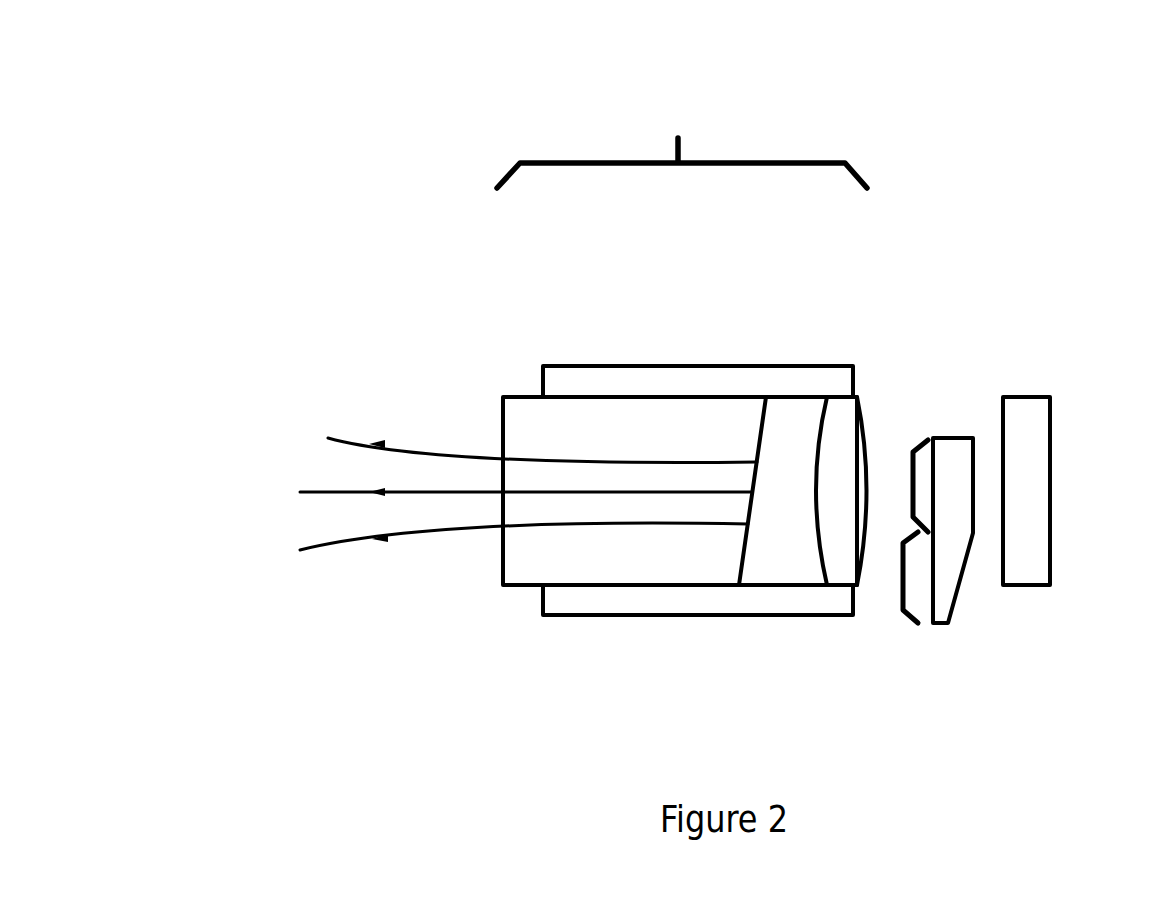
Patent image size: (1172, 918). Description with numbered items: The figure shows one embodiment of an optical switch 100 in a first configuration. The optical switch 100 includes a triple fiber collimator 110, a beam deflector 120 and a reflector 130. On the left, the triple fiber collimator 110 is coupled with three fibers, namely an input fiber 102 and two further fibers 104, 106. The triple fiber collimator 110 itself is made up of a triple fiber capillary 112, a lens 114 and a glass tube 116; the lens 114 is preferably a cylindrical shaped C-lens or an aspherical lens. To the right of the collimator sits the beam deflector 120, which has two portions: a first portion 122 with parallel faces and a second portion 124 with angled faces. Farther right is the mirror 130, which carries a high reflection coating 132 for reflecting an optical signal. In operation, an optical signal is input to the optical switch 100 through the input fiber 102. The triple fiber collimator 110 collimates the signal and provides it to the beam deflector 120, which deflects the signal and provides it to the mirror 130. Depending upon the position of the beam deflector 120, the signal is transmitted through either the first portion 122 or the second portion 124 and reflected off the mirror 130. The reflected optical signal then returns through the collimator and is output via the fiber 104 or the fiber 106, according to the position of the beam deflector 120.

The optical switch 100 is at (755, 63).
The triple fiber collimator 110 is at (682, 141).
The glass tube 116 is at (667, 365).
The triple fiber capillary 112 is at (502, 573).
The lens 114 is at (813, 540).
The input fiber 102 is at (362, 440).
The fiber 104 is at (323, 547).
The fiber 106 is at (323, 492).
The beam deflector 120 is at (954, 437).
The first portion of the beam deflector 122 is at (910, 483).
The second portion of the beam deflector 124 is at (900, 577).
The reflector 130 is at (1027, 397).
The high reflection coating 132 is at (1004, 433).